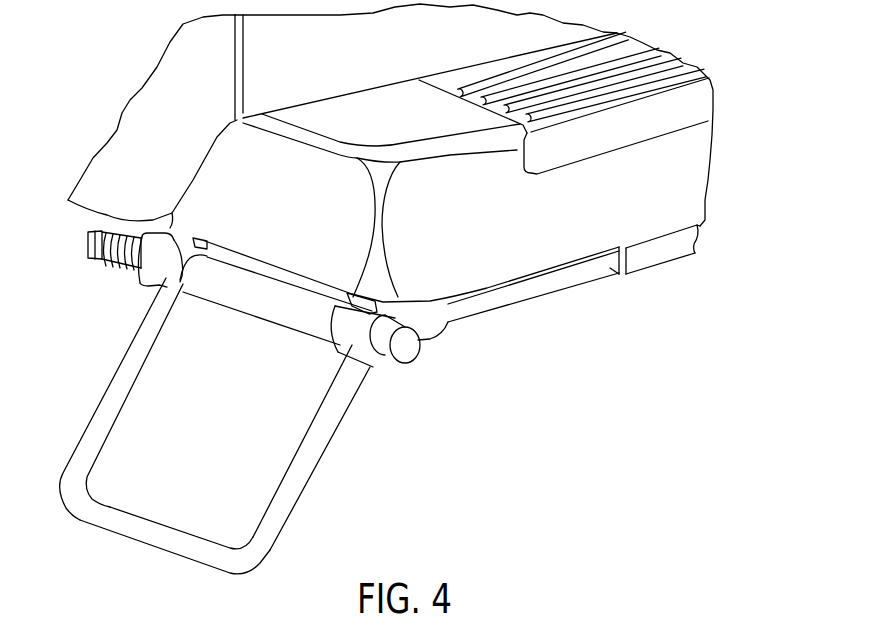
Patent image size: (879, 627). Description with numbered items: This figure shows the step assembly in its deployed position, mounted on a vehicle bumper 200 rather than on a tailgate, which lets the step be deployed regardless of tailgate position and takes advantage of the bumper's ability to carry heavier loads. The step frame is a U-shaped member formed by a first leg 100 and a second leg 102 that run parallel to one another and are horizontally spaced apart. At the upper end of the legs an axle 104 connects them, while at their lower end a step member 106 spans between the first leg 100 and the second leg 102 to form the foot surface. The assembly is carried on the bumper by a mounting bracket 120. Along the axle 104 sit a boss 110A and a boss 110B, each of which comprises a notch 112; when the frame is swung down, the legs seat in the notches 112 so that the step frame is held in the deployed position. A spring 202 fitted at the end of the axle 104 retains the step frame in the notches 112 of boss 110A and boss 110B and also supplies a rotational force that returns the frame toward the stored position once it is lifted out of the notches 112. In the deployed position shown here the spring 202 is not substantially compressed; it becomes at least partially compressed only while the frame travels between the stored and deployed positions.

The first leg 100 is at (319, 461).
The second leg 102 is at (104, 393).
The axle 104 is at (253, 320).
The step member 106 is at (162, 552).
The boss 110A is at (142, 293).
The boss 110B is at (333, 363).
The notch 112 is at (165, 283).
The mounting bracket 120 is at (532, 297).
The vehicle bumper 200 is at (700, 165).
The spring 202 is at (112, 273).